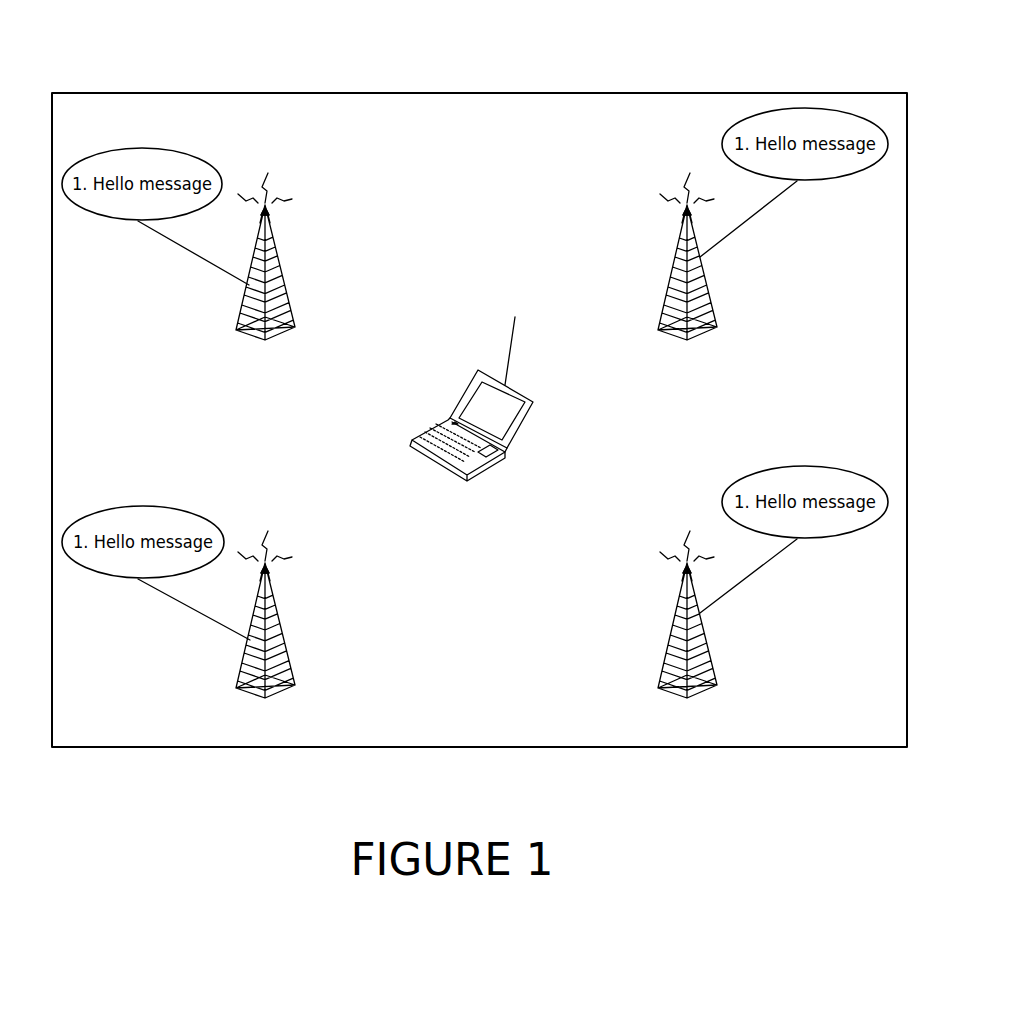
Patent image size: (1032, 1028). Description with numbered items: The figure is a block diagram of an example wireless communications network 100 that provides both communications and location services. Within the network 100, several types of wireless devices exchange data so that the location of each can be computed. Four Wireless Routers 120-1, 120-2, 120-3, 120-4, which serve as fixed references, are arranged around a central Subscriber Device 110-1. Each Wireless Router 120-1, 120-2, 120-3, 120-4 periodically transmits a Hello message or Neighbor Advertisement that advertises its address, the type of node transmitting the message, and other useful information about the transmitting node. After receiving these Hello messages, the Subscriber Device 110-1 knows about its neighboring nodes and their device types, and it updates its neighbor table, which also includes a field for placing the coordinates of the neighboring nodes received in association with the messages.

The network 100 is at (573, 93).
The Subscriber Device 110-1 is at (495, 464).
The Wireless Router 120-1 is at (283, 337).
The Wireless Router 120-2 is at (707, 334).
The Wireless Router 120-3 is at (285, 695).
The Wireless Router 120-4 is at (708, 692).